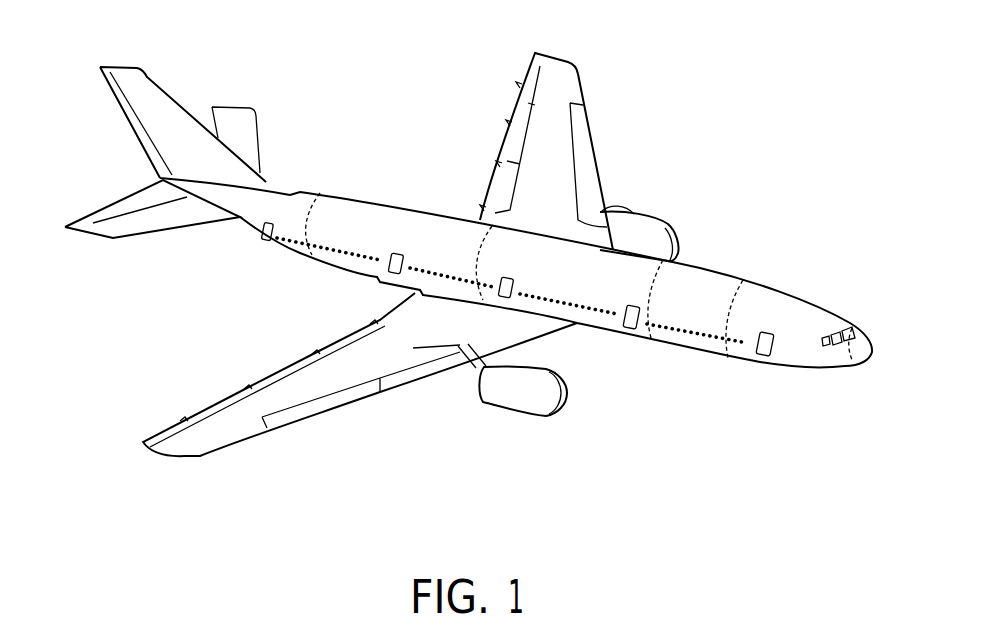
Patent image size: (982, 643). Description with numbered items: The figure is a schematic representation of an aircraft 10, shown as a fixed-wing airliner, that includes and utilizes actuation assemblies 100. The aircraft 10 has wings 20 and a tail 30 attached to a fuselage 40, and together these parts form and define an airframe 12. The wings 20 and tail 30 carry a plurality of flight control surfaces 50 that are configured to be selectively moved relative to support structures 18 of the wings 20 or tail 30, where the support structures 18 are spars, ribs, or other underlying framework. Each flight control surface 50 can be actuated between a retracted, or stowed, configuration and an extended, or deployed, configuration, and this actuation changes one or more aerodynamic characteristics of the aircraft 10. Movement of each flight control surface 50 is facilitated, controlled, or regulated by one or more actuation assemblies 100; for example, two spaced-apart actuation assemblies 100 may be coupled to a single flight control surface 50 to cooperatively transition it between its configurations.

The aircraft 10 is at (781, 43).
The airframe 12 is at (763, 129).
The support structure 18 is at (147, 98).
The wing 20 is at (582, 87).
The tail 30 is at (202, 235).
The fuselage 40 is at (407, 205).
The flight control surface 50 is at (147, 197).
The actuation assembly 100 is at (183, 103).